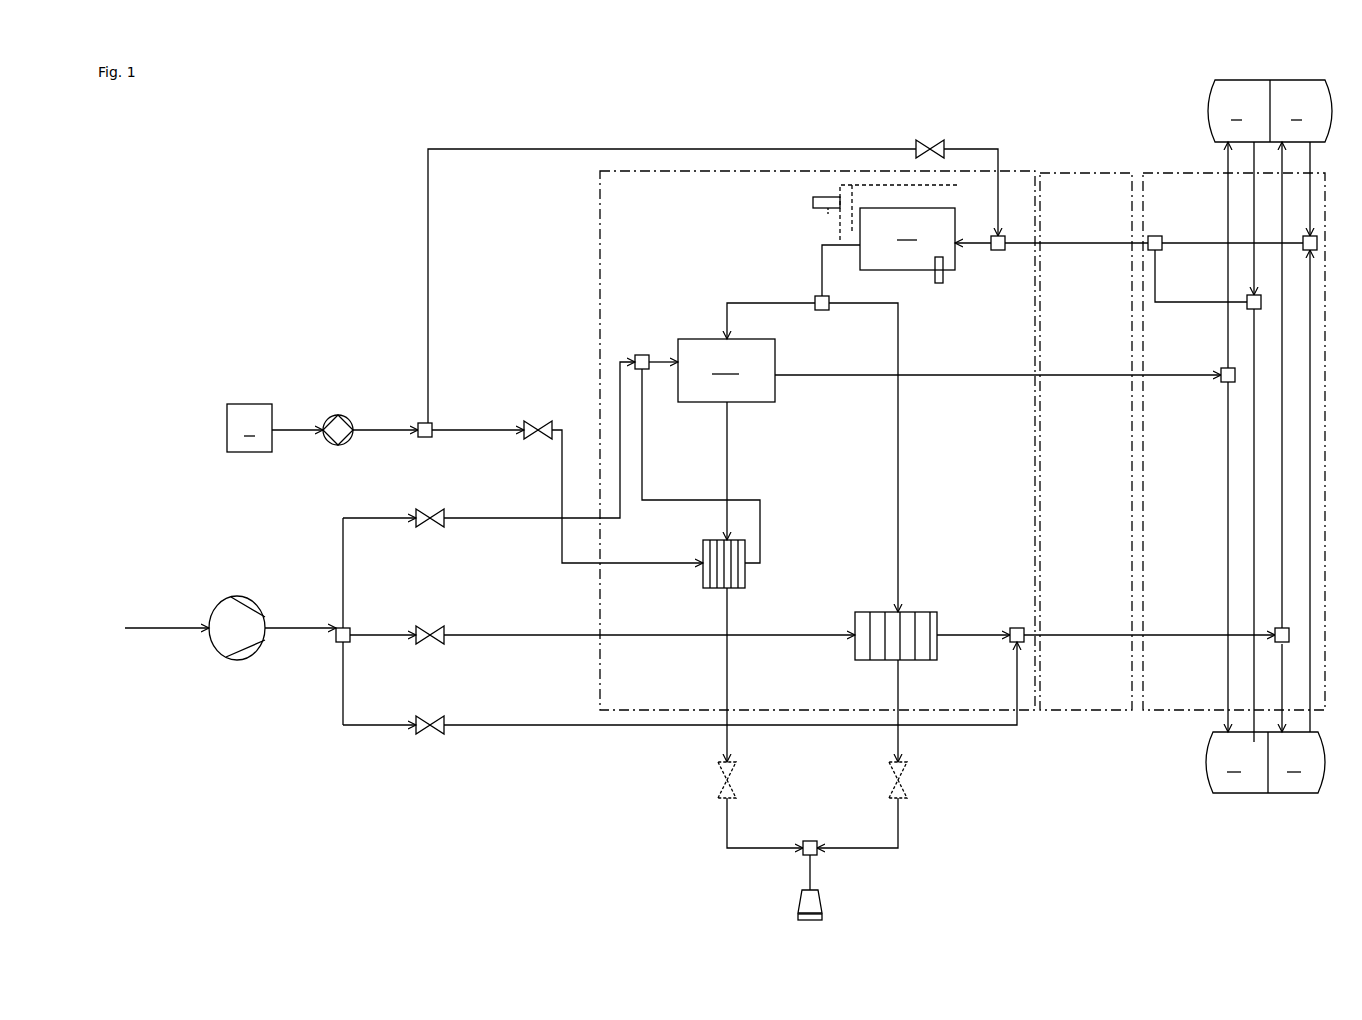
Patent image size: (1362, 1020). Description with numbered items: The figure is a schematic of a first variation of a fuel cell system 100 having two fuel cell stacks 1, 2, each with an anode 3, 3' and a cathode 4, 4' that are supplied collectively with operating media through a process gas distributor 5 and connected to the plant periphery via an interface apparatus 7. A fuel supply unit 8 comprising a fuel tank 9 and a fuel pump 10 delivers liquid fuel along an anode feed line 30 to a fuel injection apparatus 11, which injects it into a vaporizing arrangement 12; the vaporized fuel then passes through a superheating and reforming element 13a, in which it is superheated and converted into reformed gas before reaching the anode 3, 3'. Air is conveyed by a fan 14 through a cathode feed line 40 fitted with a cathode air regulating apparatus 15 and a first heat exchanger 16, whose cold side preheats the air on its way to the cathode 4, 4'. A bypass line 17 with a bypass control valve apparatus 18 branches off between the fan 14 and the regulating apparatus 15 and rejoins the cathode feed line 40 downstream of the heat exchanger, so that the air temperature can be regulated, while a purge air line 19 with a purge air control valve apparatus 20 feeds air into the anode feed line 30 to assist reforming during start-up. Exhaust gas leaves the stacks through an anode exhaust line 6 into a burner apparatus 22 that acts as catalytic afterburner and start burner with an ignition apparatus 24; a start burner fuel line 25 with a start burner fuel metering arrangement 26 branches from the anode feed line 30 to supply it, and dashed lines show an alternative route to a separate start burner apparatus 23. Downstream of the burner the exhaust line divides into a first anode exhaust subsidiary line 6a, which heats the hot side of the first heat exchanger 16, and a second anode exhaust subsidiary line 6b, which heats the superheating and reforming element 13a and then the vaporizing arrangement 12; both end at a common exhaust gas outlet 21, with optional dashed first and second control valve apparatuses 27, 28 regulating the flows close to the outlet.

The fuel cell stack 1 is at (1270, 74).
The fuel cell stack 2 is at (1265, 784).
The anode 3 is at (1236, 112).
The cathode 4 is at (1296, 112).
The anode 3' is at (1234, 764).
The cathode 4' is at (1294, 764).
The process gas distributor 5 is at (1168, 173).
The anode exhaust line 6 is at (1093, 243).
The first anode exhaust subsidiary line 6a is at (898, 450).
The second anode exhaust subsidiary line 6b is at (727, 450).
The interface apparatus 7 is at (1080, 710).
The fuel supply unit 8 is at (278, 335).
The fuel tank 9 is at (249, 428).
The fuel pump 10 is at (342, 415).
The fuel injection apparatus 11 is at (535, 423).
The vaporizing arrangement 12 is at (745, 580).
The superheating and reforming element 13a is at (726, 370).
The fan 14 is at (243, 660).
The cathode air regulating apparatus 15 is at (437, 628).
The first heat exchanger 16 is at (930, 612).
The bypass line 17 is at (535, 725).
The bypass control valve apparatus 18 is at (422, 732).
The purge air line 19 is at (505, 518).
The purge air control valve apparatus 20 is at (437, 510).
The exhaust gas outlet 21 is at (820, 900).
The burner apparatus 22 is at (907, 239).
The start burner apparatus 23 is at (836, 222).
The ignition apparatus 24 is at (813, 202).
The start burner fuel line 25 is at (670, 149).
The start burner fuel metering arrangement 26 is at (930, 140).
The first control valve apparatus 27 is at (903, 782).
The second control valve apparatus 28 is at (730, 782).
The anode feed line 30 is at (1012, 375).
The cathode feed line 40 is at (535, 635).
The fuel cell system 100 is at (308, 196).